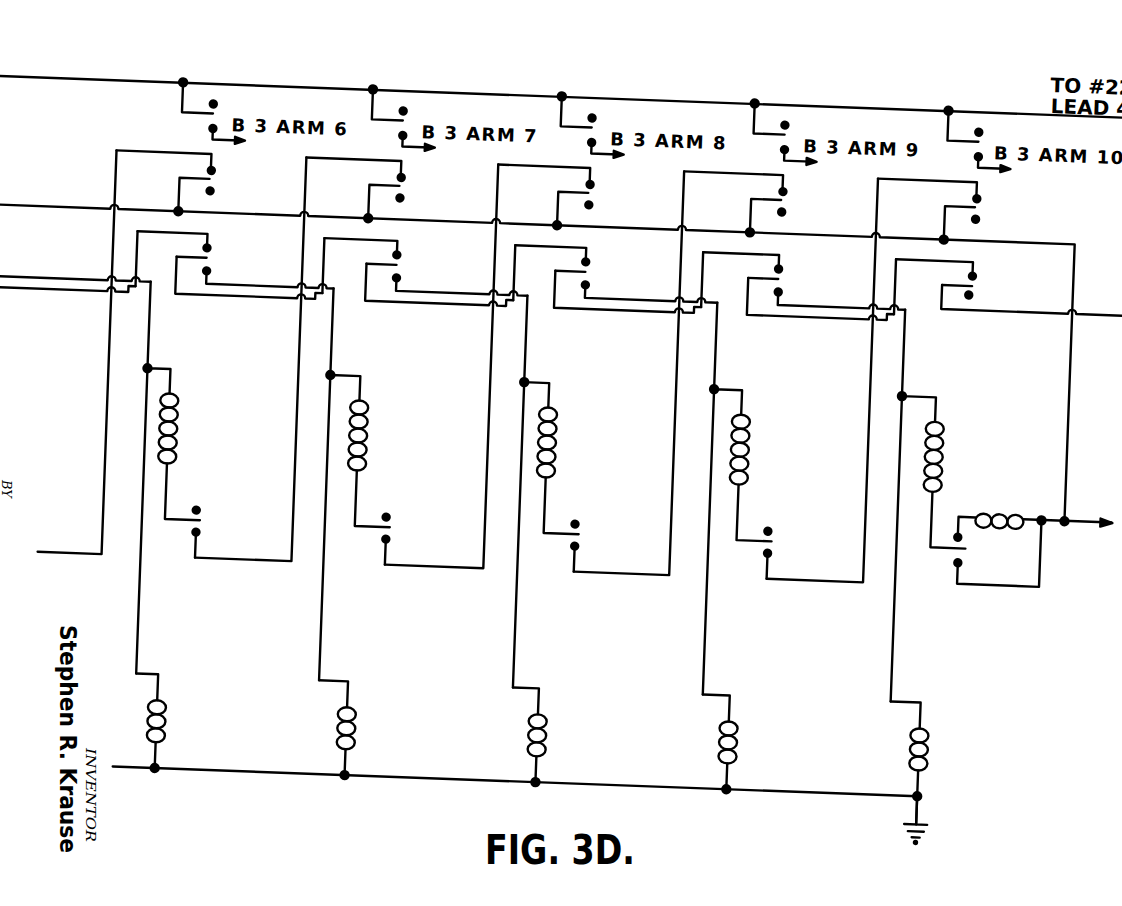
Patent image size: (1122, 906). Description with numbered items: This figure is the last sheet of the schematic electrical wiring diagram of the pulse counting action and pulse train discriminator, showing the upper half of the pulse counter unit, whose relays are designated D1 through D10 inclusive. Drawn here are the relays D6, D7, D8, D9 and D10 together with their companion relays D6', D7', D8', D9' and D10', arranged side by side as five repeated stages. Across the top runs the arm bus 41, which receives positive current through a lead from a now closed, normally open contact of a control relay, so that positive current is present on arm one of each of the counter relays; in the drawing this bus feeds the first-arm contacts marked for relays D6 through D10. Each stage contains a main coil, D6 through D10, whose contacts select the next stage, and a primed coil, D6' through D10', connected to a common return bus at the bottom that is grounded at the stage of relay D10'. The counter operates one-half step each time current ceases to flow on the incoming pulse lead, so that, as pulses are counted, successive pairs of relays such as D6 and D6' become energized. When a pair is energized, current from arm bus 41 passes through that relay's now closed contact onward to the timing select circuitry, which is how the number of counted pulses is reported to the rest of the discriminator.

The arm bus 41 is at (990, 75).
The relay D6 is at (177, 479).
The relay D7 is at (363, 485).
The relay D8 is at (555, 493).
The relay D9 is at (746, 500).
The relay D10 is at (1003, 510).
The relay D6' is at (173, 723).
The relay D7' is at (359, 730).
The relay D8' is at (551, 737).
The relay D9' is at (742, 744).
The relay D10' is at (936, 764).